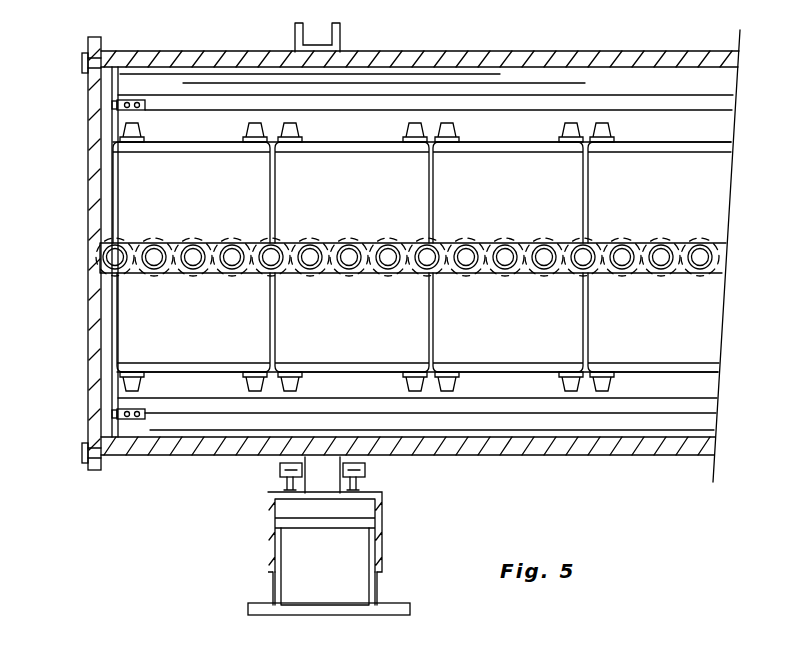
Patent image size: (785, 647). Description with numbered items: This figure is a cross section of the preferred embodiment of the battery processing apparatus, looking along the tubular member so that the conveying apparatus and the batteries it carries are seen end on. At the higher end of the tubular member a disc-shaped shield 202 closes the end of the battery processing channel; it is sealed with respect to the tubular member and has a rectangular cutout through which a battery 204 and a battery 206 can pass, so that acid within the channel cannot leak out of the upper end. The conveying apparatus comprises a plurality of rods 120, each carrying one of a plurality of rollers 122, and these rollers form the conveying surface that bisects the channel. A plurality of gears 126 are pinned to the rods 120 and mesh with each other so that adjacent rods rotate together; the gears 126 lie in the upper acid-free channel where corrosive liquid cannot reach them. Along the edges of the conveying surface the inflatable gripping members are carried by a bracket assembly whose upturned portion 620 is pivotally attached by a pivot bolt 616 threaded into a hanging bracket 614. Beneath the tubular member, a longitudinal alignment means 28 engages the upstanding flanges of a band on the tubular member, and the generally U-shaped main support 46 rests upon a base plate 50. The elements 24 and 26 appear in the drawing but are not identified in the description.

The disc-shaped shield 202 is at (94, 78).
The hanging bracket 614 is at (128, 100).
The pivot bolt 616 is at (116, 106).
The upturned portion 620 is at (121, 133).
The battery 204 is at (211, 207).
The battery 206 is at (196, 346).
The rollers 122 is at (103, 247).
The rods 120 is at (114, 258).
The gears 126 is at (185, 272).
The left support bracket 24 is at (288, 482).
The right support bracket 26 is at (358, 482).
The longitudinal alignment means 28 is at (387, 520).
The main support 46 is at (375, 592).
The base plate 50 is at (405, 610).